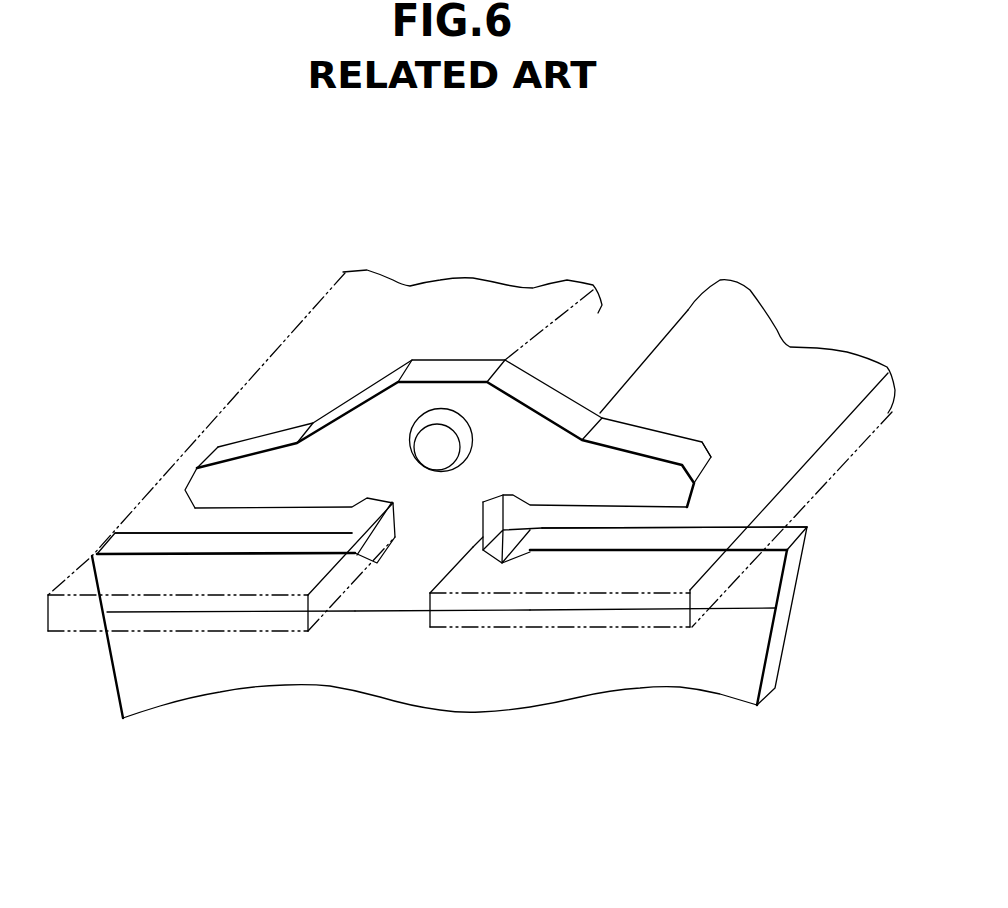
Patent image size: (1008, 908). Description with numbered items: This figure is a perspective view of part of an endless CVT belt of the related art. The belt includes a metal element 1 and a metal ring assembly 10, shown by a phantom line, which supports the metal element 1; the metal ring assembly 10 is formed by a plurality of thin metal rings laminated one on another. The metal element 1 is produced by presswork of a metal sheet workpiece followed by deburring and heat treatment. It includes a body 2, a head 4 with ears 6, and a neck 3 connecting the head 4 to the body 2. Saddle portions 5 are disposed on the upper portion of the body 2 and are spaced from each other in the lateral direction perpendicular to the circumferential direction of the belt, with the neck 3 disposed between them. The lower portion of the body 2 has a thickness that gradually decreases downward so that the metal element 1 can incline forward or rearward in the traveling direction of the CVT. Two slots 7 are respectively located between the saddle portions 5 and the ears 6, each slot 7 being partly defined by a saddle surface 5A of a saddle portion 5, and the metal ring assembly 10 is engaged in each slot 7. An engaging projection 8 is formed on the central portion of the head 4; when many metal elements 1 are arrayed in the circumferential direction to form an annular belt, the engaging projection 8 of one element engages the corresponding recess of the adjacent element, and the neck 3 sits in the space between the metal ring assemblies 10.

The metal element 1 is at (268, 411).
The body 2 is at (393, 672).
The neck 3 is at (455, 522).
The head 4 is at (442, 378).
The saddle portions 5 is at (115, 575).
The saddle surface 5A is at (140, 542).
The ears 6 is at (220, 478).
The slots 7 is at (283, 520).
The engaging projection 8 is at (438, 445).
The metal ring assembly 10 is at (317, 300).